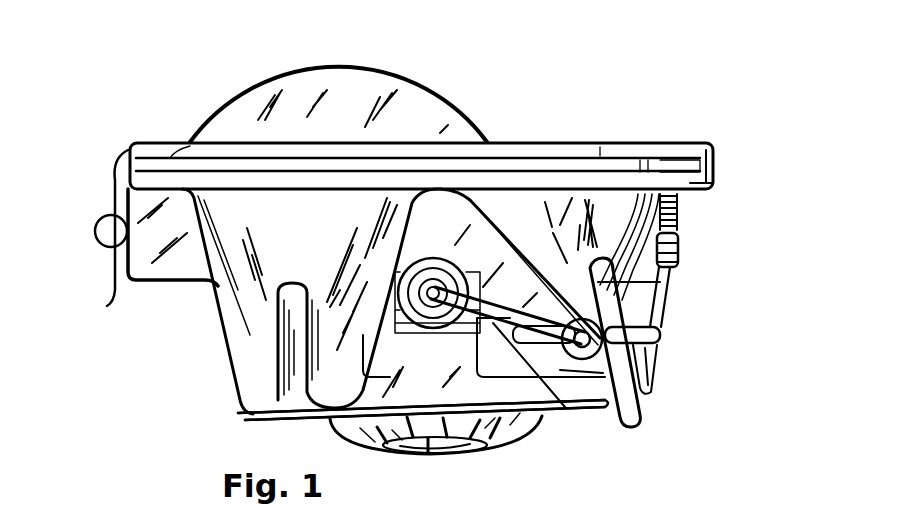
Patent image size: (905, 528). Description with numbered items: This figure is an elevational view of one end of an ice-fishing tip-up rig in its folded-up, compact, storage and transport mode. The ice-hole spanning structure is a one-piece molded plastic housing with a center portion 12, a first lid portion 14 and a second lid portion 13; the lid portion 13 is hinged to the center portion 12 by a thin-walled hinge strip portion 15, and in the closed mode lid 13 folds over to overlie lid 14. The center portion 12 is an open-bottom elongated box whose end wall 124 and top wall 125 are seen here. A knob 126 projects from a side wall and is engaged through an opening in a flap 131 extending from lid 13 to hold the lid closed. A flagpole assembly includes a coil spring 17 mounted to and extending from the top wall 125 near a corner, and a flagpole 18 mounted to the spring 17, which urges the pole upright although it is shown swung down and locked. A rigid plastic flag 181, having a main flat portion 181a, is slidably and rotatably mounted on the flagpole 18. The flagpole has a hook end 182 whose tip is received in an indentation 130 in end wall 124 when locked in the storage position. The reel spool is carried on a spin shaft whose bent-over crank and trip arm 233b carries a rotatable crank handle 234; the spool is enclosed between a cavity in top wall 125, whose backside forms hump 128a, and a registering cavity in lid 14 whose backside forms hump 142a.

The center portion 12 is at (140, 283).
The second lid portion 13 is at (575, 143).
The first lid portion 14 is at (645, 158).
The hinge strip portion 15 is at (712, 168).
The coil spring 17 is at (680, 230).
The flagpole 18 is at (664, 318).
The second end wall 124 is at (255, 336).
The top wall 125 is at (716, 184).
The knob 126 is at (95, 230).
The hump 128a is at (450, 455).
The indentation 130 is at (600, 279).
The flap 131 is at (110, 175).
The hump 142a is at (350, 64).
The flag 181 is at (238, 417).
The main flat portion 181a is at (353, 437).
The hook end 182 is at (662, 293).
The crank and trip arm 233b is at (505, 345).
The crank handle 234 is at (660, 348).